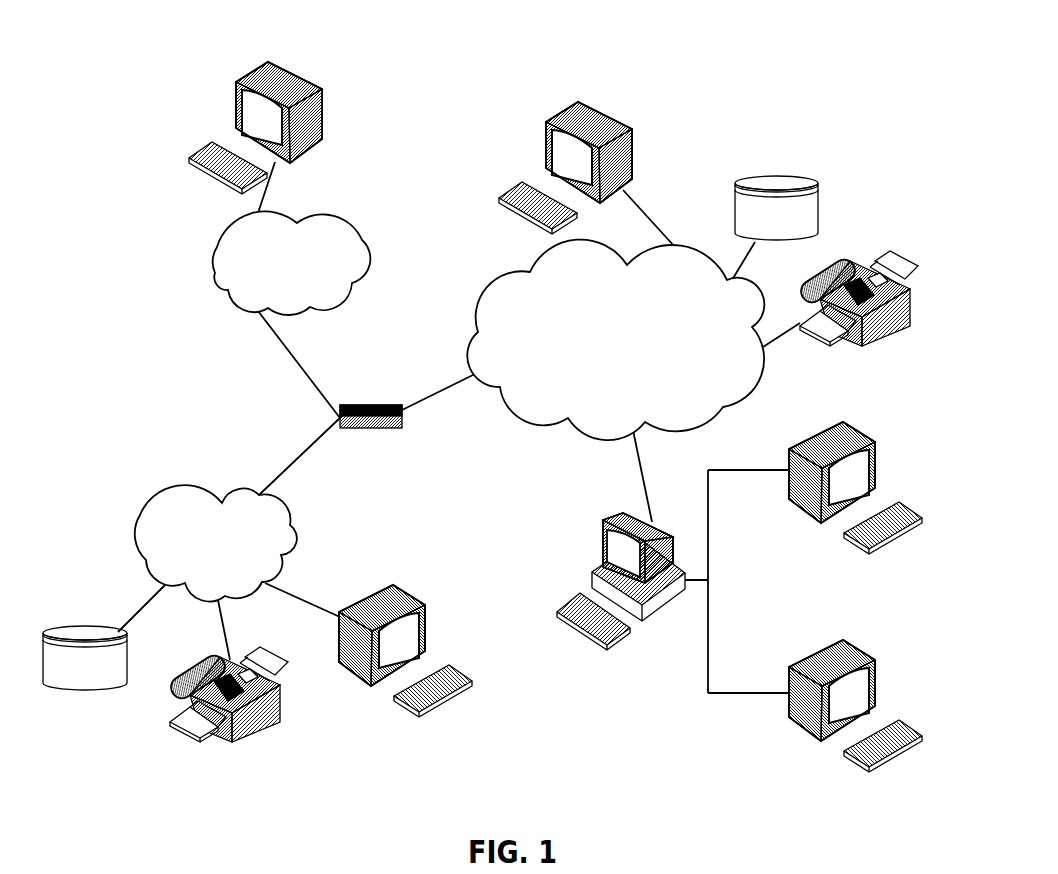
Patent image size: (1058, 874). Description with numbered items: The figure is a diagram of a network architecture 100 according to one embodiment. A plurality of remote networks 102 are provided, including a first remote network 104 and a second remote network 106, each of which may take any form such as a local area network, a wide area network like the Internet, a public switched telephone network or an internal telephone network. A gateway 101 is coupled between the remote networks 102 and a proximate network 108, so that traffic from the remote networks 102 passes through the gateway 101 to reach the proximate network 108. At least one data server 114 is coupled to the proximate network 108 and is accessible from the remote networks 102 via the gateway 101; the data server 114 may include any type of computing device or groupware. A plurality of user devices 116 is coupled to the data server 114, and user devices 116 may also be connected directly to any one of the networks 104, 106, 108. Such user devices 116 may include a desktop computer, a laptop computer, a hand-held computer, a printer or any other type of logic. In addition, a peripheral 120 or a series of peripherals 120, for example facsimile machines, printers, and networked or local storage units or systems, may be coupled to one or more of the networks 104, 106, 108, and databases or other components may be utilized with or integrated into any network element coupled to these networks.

The architecture 100 is at (166, 44).
The gateway 101 is at (352, 405).
The remote networks 102 is at (195, 326).
The first remote network 104 is at (140, 515).
The second remote network 106 is at (363, 237).
The proximate network 108 is at (723, 408).
The data server 114 is at (603, 535).
The user devices 116 is at (322, 90).
The peripheral 120 is at (818, 187).